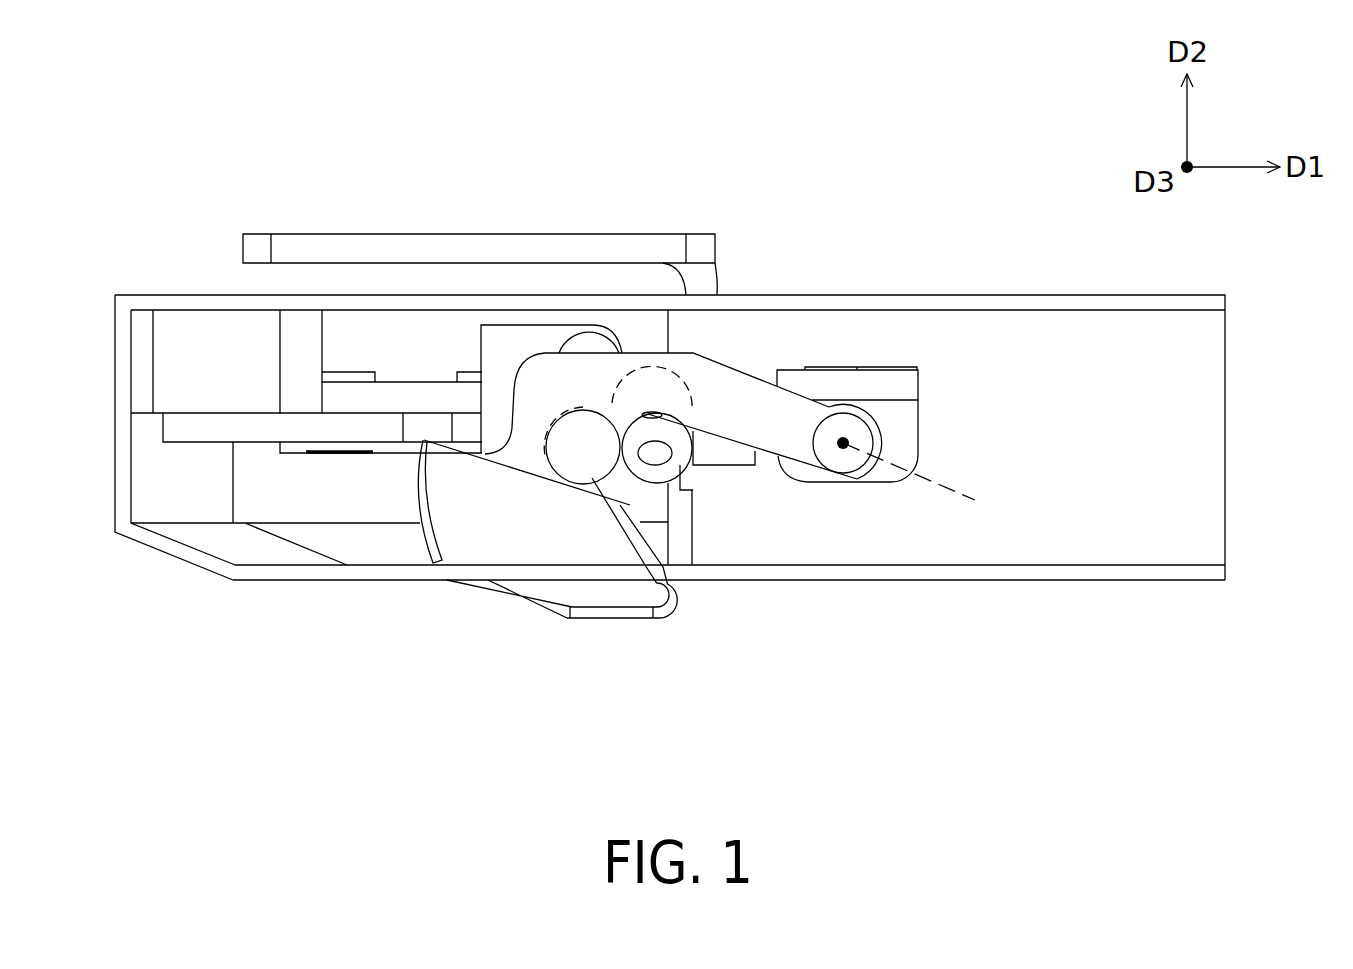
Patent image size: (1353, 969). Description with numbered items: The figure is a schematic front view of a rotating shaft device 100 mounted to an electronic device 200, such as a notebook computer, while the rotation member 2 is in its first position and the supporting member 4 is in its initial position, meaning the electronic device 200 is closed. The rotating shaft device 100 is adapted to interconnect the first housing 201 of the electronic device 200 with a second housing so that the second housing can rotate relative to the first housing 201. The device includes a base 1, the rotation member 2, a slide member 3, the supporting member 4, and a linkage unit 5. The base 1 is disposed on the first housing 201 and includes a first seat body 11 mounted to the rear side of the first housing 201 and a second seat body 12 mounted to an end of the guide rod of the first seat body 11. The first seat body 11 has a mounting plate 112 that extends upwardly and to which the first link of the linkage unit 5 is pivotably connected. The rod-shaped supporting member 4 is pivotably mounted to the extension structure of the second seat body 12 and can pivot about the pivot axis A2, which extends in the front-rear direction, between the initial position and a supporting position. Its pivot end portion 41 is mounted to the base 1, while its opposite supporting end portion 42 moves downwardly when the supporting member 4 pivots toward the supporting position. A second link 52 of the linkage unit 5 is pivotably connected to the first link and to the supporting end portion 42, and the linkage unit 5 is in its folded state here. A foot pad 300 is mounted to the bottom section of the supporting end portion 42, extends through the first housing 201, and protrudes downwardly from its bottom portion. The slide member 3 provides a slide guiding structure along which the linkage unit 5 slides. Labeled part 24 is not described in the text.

The base 1 is at (262, 443).
The first seat body 11 is at (196, 425).
The mounting plate 112 is at (498, 340).
The rotation member 2 is at (480, 192).
The top plate 24 is at (503, 243).
The slide member 3 is at (756, 474).
The supporting member 4 is at (683, 333).
The pivot end portion 41 is at (817, 410).
The supporting end portion 42 is at (528, 457).
The linkage unit 5 is at (658, 453).
The second link 52 is at (587, 475).
The second seat body 12 is at (900, 418).
The rotating shaft device 100 is at (821, 493).
The electronic device 200 is at (1113, 584).
The first housing 201 is at (997, 583).
The foot pad 300 is at (550, 620).
The pivot axis A2 is at (934, 480).